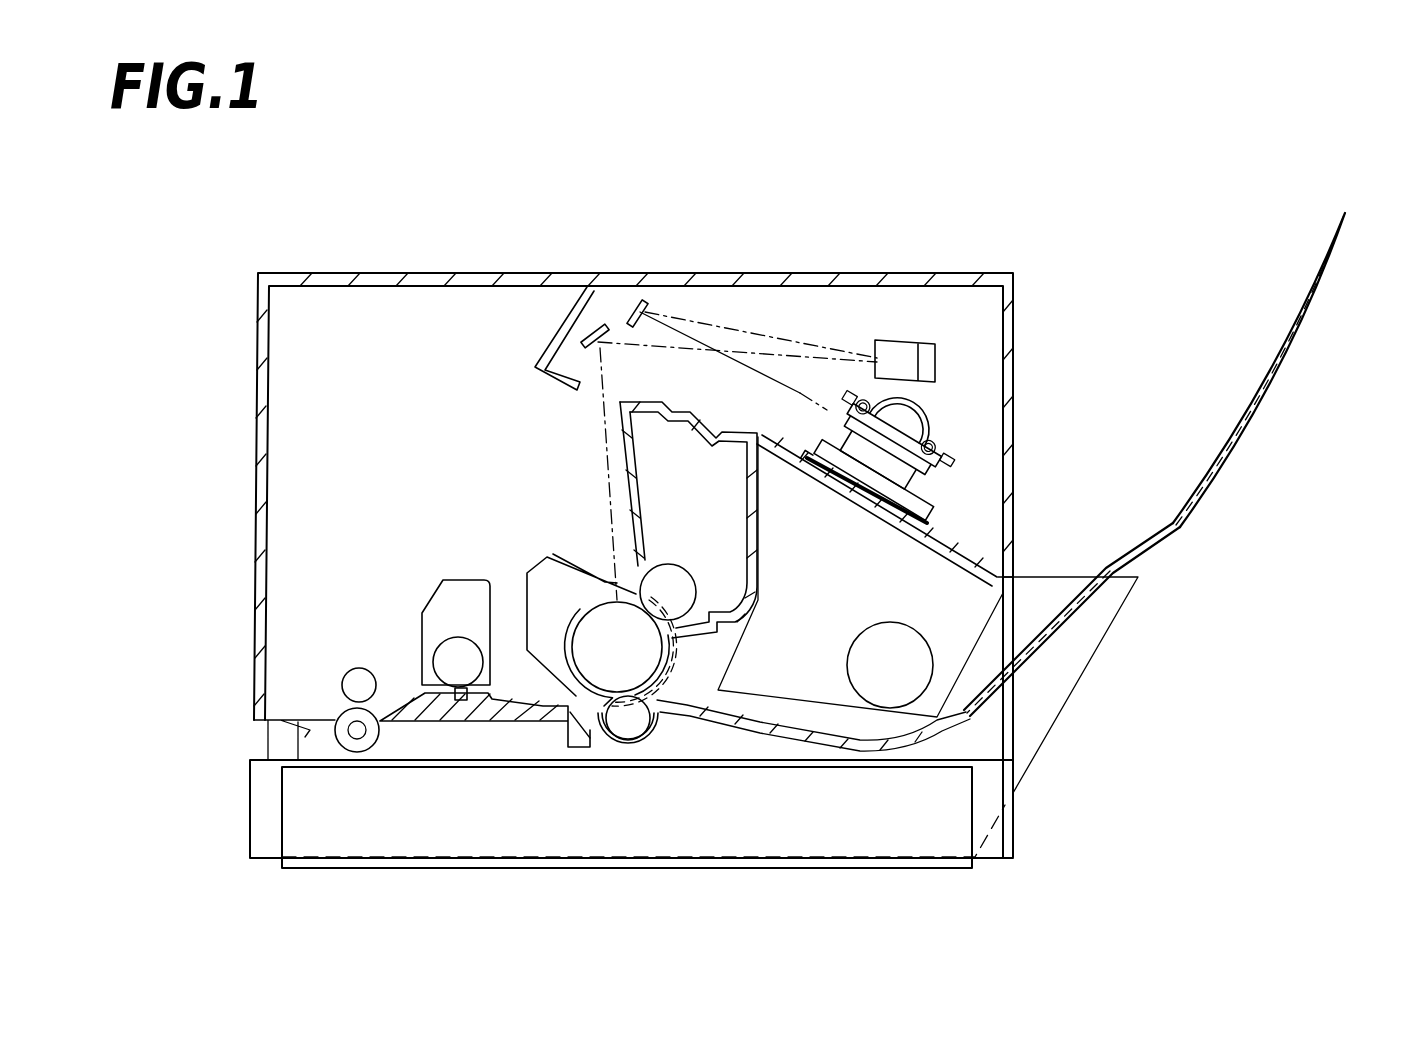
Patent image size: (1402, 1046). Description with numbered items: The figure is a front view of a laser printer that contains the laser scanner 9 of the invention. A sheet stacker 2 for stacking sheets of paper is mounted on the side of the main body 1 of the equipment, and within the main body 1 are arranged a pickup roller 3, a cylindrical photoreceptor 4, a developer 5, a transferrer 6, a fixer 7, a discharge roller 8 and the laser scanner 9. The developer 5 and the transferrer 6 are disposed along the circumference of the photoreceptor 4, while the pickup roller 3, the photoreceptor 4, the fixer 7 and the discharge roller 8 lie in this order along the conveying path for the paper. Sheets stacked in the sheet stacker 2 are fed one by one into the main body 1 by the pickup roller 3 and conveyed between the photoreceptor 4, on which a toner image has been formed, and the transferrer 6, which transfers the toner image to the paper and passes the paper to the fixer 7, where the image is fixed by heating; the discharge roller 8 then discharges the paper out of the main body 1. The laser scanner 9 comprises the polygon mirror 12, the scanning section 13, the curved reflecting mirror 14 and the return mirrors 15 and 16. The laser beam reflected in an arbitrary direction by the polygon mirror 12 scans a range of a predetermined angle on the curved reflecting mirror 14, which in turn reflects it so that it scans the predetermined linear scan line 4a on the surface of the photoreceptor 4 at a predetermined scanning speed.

The main body 1 is at (1017, 392).
The sheet stacker 2 is at (1235, 435).
The pickup roller 3 is at (872, 650).
The photoreceptor 4 is at (588, 627).
The scan line 4a is at (637, 598).
The developer 5 is at (690, 458).
The transferrer 6 is at (628, 730).
The fixer 7 is at (443, 658).
The discharge roller 8 is at (350, 686).
The laser scanner 9 is at (807, 370).
The polygon mirror 12 is at (930, 465).
The scanning section 13 is at (890, 472).
The curved reflecting mirror 14 is at (928, 350).
The return mirror 15 is at (632, 300).
The return mirror 16 is at (588, 337).